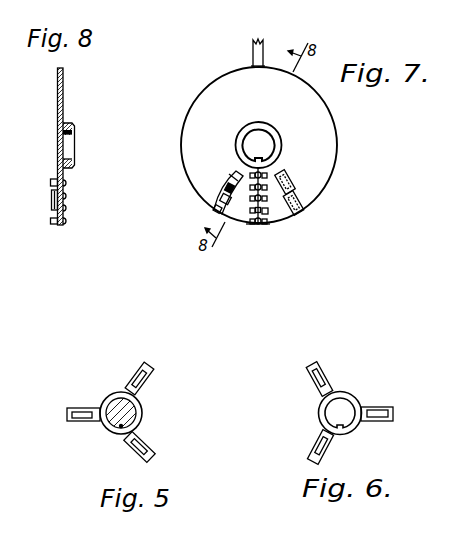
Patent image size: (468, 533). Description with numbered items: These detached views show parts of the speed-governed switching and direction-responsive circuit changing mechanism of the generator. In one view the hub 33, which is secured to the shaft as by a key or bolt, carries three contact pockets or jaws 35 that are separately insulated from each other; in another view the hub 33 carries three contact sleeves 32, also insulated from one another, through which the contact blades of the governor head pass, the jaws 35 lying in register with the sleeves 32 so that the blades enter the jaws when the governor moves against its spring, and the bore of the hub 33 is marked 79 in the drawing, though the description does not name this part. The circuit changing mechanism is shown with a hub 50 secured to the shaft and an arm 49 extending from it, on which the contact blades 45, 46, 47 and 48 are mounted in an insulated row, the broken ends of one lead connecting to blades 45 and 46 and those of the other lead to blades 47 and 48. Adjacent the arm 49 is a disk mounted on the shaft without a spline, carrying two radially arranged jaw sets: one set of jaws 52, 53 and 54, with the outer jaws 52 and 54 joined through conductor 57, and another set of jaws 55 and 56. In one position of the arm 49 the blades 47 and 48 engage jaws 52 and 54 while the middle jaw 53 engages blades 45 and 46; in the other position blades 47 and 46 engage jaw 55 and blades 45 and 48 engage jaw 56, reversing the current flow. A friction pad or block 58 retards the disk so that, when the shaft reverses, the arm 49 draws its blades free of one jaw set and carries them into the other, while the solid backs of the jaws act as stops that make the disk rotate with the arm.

In FIG. 6, the contact sleeves 32 is at (311, 372).
In FIG. 5, the hub 33 is at (111, 396).
In FIG. 6, the hub 33 is at (346, 396).
In FIG. 5, the contact pockets or jaws 35 is at (148, 380).
In FIG. 7, the contact blade 45 is at (246, 225).
In FIG. 7, the contact blade 46 is at (274, 225).
In FIG. 7, the contact blade 47 is at (281, 223).
In FIG. 7, the contact blade 48 is at (266, 225).
In FIG. 7, the arm 49 is at (263, 170).
In FIG. 7, the hub 50 is at (281, 146).
In FIG. 7, the contact jaw 52 is at (229, 178).
In FIG. 8, the contact jaw 52 is at (50, 183).
In FIG. 7, the middle jaw 53 is at (222, 191).
In FIG. 8, the middle jaw 53 is at (52, 202).
In FIG. 7, the contact jaw 54 is at (215, 208).
In FIG. 8, the contact jaw 54 is at (53, 223).
In FIG. 7, the contact jaw 55 is at (293, 180).
In FIG. 7, the contact jaw 56 is at (301, 204).
In FIG. 7, the conductor 57 is at (213, 95).
In FIG. 8, the conductor 57 is at (63, 98).
In FIG. 7, the friction pad or block 58 is at (262, 38).
In FIG. 5, the shaft 79 is at (127, 417).